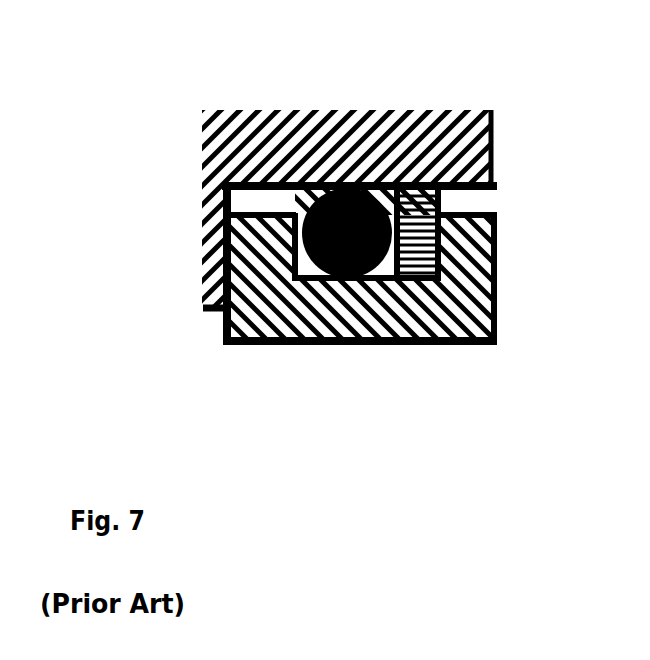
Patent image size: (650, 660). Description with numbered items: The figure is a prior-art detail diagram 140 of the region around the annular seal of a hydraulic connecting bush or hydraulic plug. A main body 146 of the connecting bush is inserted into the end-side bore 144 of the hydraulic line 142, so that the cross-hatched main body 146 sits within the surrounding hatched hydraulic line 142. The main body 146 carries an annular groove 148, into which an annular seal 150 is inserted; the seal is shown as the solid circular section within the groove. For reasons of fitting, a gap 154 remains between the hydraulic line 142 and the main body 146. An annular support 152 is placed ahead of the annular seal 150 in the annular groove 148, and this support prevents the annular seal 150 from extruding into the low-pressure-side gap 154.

The detail diagram 140 is at (408, 378).
The hydraulic line 142 is at (235, 113).
The end-side bore 144 is at (212, 197).
The main body 146 is at (480, 272).
The annular groove 148 is at (315, 283).
The annular seal 150 is at (340, 188).
The annular support 152 is at (419, 190).
The gap 154 is at (490, 202).